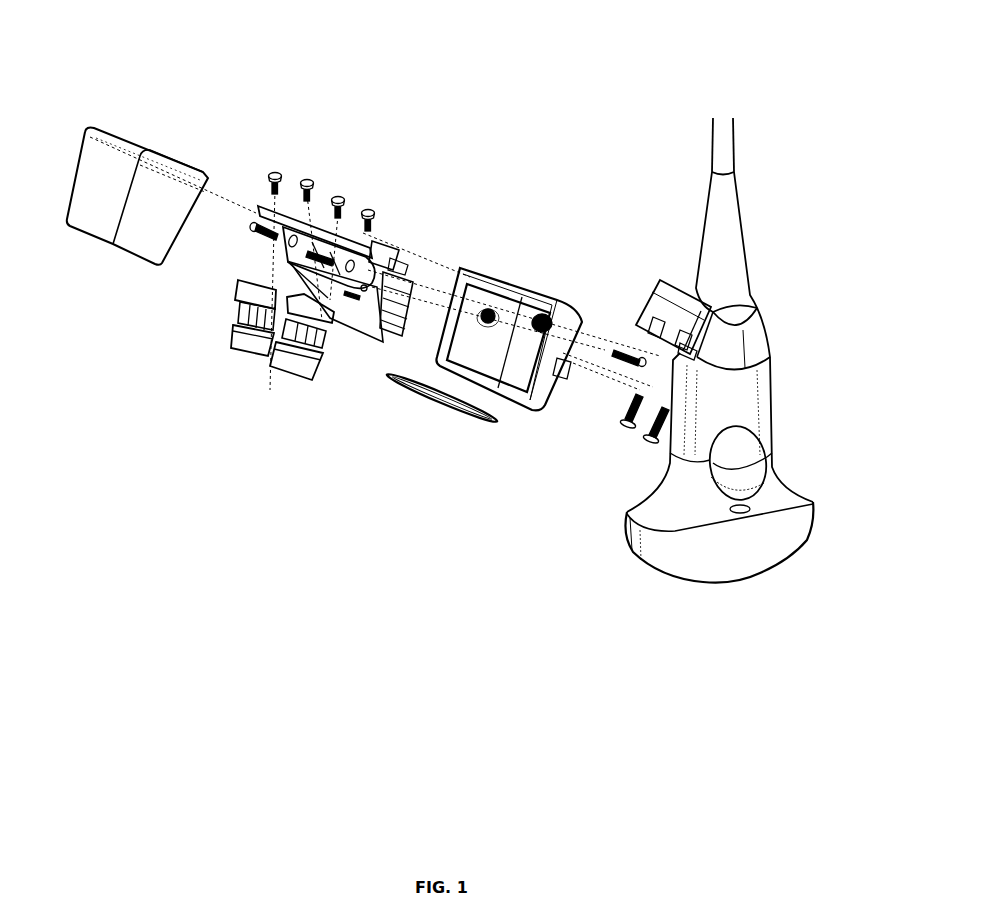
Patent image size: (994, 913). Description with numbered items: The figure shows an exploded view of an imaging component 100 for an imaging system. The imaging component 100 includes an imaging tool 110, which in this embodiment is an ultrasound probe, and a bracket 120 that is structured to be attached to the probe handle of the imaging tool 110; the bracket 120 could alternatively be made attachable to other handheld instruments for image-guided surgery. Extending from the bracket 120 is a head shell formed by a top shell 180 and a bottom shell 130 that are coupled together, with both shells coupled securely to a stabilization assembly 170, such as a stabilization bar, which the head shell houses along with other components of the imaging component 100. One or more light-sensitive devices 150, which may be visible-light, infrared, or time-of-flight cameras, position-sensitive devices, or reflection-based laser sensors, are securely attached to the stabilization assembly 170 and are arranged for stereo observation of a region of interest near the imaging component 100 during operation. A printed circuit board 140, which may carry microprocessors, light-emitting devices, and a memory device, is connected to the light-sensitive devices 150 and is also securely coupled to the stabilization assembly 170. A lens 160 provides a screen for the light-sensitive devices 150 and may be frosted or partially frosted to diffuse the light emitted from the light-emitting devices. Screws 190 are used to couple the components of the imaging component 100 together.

The imaging component 100 is at (552, 95).
The imaging tool 110 is at (855, 489).
The bracket 120 is at (780, 361).
The bottom shell 130 is at (543, 282).
The printed circuit board 140 is at (408, 272).
The light-sensitive devices 150 is at (275, 375).
The lens 160 is at (397, 388).
The stabilization assembly 170 is at (275, 250).
The top shell 180 is at (75, 232).
The screws 190 is at (341, 188).